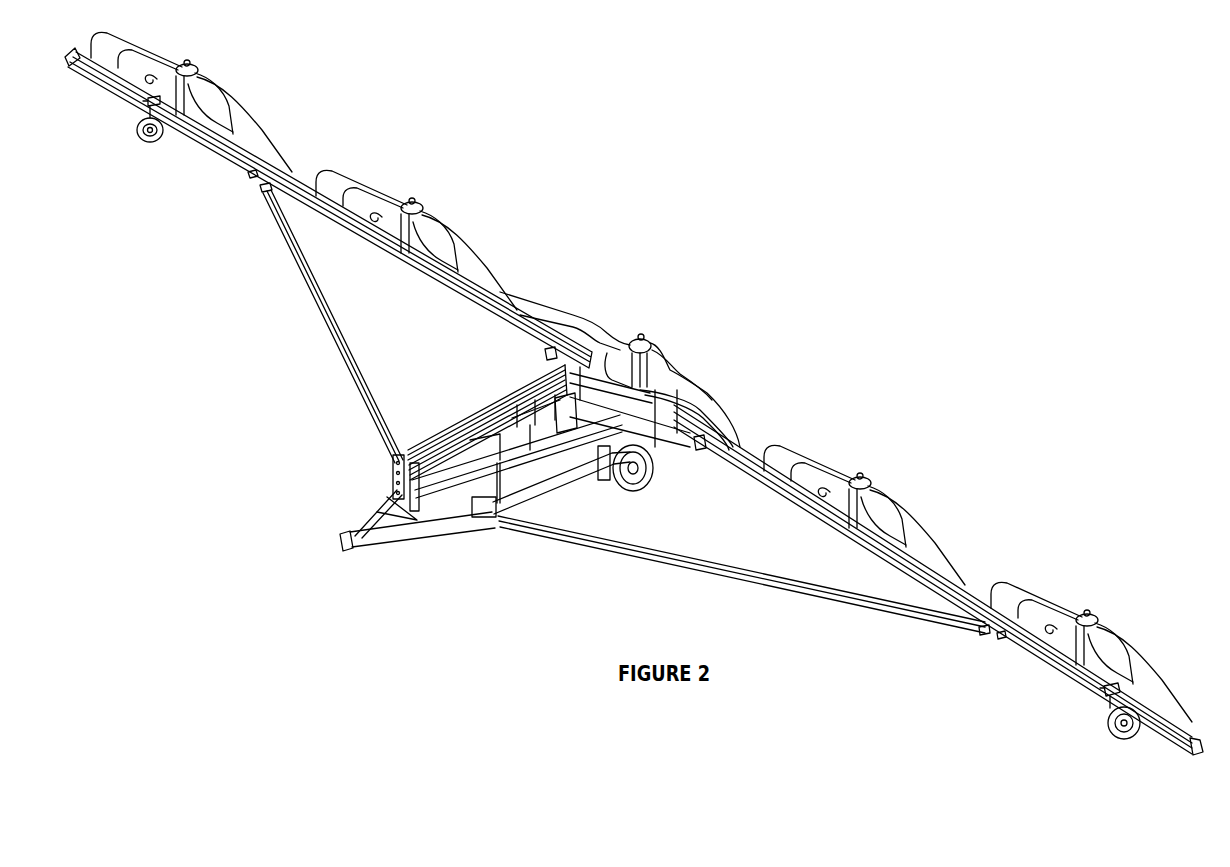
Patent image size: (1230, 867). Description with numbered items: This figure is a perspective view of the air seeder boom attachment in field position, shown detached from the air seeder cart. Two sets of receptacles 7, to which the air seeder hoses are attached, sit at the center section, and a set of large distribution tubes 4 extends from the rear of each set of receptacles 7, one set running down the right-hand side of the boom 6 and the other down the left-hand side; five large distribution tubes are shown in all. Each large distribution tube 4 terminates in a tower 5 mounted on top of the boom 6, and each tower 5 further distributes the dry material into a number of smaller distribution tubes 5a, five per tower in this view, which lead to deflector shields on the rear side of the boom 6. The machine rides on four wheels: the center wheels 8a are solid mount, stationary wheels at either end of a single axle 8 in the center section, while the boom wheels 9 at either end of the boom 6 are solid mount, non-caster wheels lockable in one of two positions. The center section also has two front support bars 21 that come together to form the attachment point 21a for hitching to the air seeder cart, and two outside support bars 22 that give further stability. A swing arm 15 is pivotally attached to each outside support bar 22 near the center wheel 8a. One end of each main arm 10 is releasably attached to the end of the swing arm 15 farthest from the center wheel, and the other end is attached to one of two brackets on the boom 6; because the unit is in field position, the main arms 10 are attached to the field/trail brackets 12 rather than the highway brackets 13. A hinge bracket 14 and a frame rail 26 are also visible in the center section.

The large distribution tube 4 is at (297, 181).
The tower 5 is at (187, 64).
The smaller distribution tube 5a is at (713, 397).
The boom 6 is at (86, 66).
The receptacles 7 is at (393, 463).
The axle 8 is at (560, 408).
The center wheel 8a is at (637, 497).
The boom wheel 9 is at (147, 133).
The main arm 10 is at (330, 318).
The field/trail bracket 12 is at (263, 191).
The highway bracket 13 is at (250, 174).
The hinge bracket 14 is at (546, 351).
The swing arm 15 is at (522, 490).
The front support bar 21 is at (373, 507).
The attachment point 21a is at (345, 550).
The outside support bar 22 is at (540, 500).
The frame rail 26 is at (567, 462).